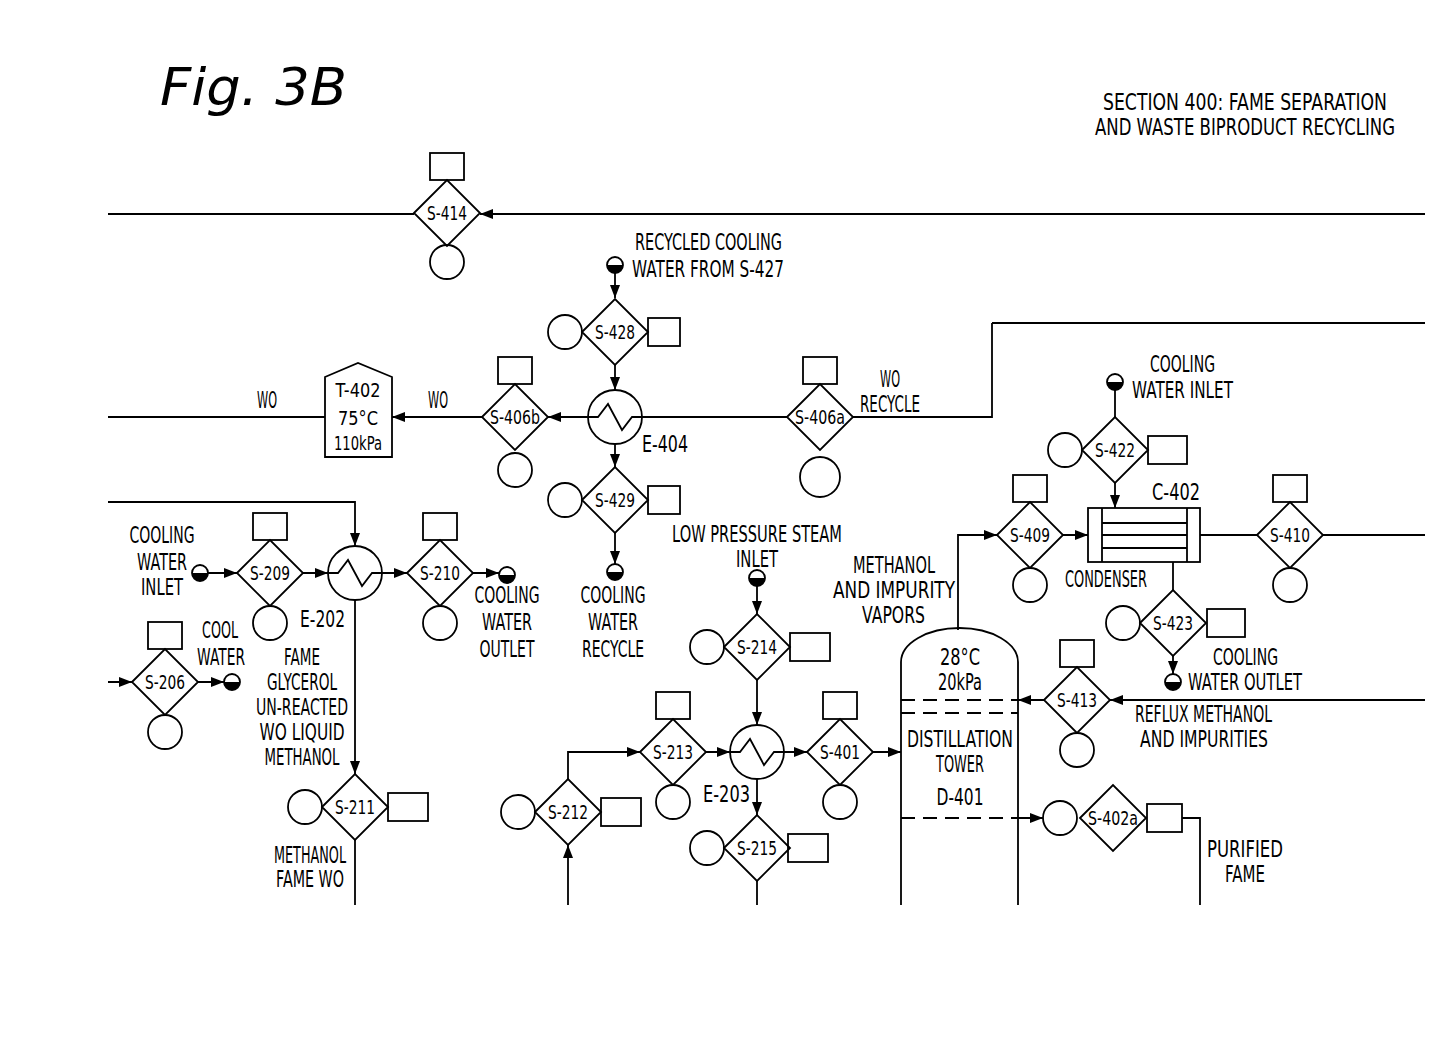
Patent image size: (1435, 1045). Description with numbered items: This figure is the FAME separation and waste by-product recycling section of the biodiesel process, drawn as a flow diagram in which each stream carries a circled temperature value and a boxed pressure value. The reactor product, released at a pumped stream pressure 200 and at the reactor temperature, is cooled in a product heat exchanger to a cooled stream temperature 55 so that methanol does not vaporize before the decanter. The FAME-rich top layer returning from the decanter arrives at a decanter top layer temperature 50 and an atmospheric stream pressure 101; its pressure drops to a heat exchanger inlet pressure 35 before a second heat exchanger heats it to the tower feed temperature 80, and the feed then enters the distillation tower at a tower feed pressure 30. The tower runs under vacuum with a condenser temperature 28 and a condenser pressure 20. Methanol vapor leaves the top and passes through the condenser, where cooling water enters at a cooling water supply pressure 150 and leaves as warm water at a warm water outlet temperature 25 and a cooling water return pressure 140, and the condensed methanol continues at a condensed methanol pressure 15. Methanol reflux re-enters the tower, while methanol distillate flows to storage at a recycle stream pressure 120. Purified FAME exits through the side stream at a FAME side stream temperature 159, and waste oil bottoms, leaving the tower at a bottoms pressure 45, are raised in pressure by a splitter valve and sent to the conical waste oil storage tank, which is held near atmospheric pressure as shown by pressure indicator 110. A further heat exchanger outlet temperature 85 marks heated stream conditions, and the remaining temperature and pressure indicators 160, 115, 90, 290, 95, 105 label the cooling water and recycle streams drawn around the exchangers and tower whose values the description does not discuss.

The stream pressure indicator (kPa) 110 is at (628, 507).
The condenser temperature 28 is at (868, 506).
The bottoms pressure 45 is at (502, 477).
The stream pressure indicator (kPa) 160 is at (664, 332).
The stream pressure indicator (kPa) 115 is at (515, 373).
The stream temperature indicator (°C) 90 is at (515, 470).
The recycle stream pressure 120 is at (820, 373).
The stream temperature indicator (°C) 290 is at (820, 477).
The heat exchanger outlet temperature 85 is at (565, 500).
The cooling water supply pressure 150 is at (719, 490).
The cooling water return pressure 140 is at (695, 583).
The warm water outlet temperature 25 is at (696, 639).
The stream temperature indicator (°C) 95 is at (436, 790).
The cooled stream temperature 55 is at (305, 807).
The pumped stream pressure 200 is at (408, 807).
The heat exchanger inlet pressure 35 is at (673, 708).
The decanter top layer temperature 50 is at (595, 807).
The atmospheric stream pressure 101 is at (621, 812).
The stream temperature/pressure indicator 105 is at (759, 647).
The tower feed pressure 30 is at (1002, 762).
The tower feed temperature 80 is at (840, 802).
The condenser pressure 20 is at (1047, 470).
The condensed methanol pressure 15 is at (1290, 491).
The FAME side stream temperature 159 is at (1060, 818).